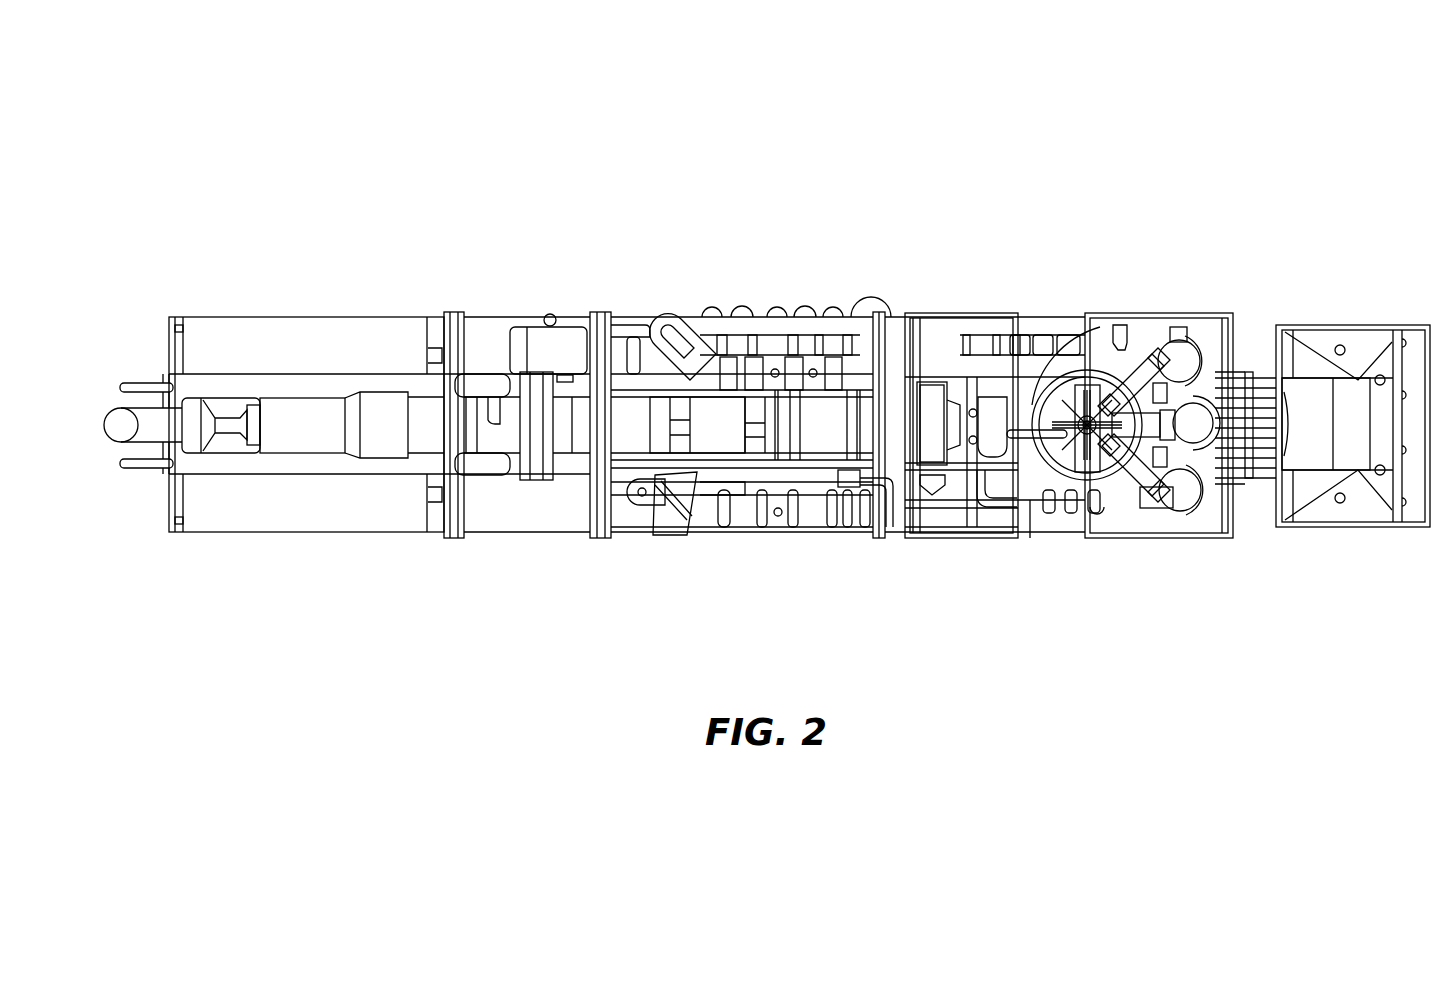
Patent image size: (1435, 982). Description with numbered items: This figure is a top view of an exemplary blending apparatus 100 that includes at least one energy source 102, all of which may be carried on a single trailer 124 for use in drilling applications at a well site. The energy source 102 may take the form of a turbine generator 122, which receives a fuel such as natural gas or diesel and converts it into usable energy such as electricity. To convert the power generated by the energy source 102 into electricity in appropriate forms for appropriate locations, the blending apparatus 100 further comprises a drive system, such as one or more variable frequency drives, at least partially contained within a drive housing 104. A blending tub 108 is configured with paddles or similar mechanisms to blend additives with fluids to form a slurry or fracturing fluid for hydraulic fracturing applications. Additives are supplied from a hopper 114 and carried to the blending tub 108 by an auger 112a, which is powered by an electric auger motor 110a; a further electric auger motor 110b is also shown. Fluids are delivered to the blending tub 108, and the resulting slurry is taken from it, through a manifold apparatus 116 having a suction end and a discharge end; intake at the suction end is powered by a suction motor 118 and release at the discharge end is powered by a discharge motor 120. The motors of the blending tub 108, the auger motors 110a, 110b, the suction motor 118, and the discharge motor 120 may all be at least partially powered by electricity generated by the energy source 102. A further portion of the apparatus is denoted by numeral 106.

The blending apparatus 100 is at (335, 134).
The energy source 102 is at (215, 328).
The drive housing 104 is at (516, 512).
The housing section 106 is at (893, 420).
The blending tub 108 is at (1080, 355).
The electric auger motor 110a is at (1160, 358).
The second pump 110b is at (1192, 532).
The auger 112a is at (1254, 366).
The hopper 114 is at (1401, 322).
The manifold apparatus 116 is at (667, 330).
The suction motor 118 is at (541, 315).
The discharge motor 120 is at (703, 427).
The turbine generator 122 is at (303, 417).
The trailer 124 is at (1134, 538).